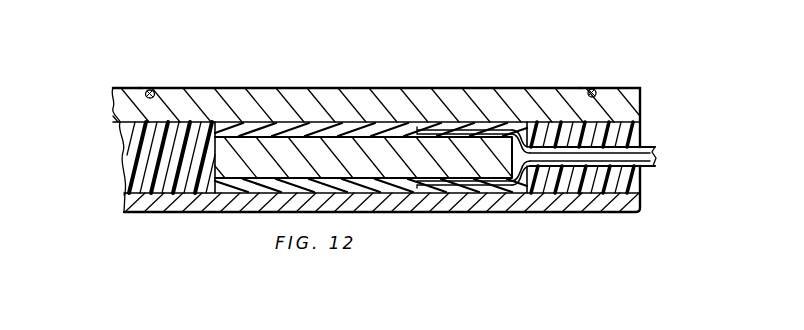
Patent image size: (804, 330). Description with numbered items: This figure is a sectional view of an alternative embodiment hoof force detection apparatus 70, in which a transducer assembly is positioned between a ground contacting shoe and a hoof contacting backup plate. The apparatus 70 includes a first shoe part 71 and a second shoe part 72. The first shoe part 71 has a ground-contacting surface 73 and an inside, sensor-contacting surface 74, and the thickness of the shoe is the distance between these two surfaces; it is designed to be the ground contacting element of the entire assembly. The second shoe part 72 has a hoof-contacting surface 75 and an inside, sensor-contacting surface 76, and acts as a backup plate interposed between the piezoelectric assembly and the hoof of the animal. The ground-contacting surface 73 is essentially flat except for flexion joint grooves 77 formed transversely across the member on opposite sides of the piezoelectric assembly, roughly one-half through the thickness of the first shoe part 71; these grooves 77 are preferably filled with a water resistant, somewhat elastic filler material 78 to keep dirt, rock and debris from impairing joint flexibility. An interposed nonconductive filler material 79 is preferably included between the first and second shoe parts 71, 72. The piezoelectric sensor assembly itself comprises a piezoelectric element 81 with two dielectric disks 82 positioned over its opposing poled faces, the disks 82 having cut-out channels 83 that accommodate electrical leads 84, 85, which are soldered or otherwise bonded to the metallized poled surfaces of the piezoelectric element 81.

The hoof force detection apparatus 70 is at (536, 73).
The first shoe part 71 is at (465, 92).
The second shoe part 72 is at (533, 206).
The ground-contacting surface 73 is at (332, 88).
The sensor-contacting surface 74 is at (128, 128).
The hoof-contacting surface 75 is at (216, 212).
The sensor-contacting surface 76 is at (122, 183).
The flexion joint grooves 77 is at (147, 80).
The filler material 78 is at (153, 91).
The nonconductive filler material 79 is at (126, 138).
The piezoelectric element 81 is at (363, 157).
The dielectric disks 82 is at (263, 125).
The cut-out channels 83 is at (472, 88).
The electrical lead 84 is at (539, 98).
The electrical lead 85 is at (532, 195).